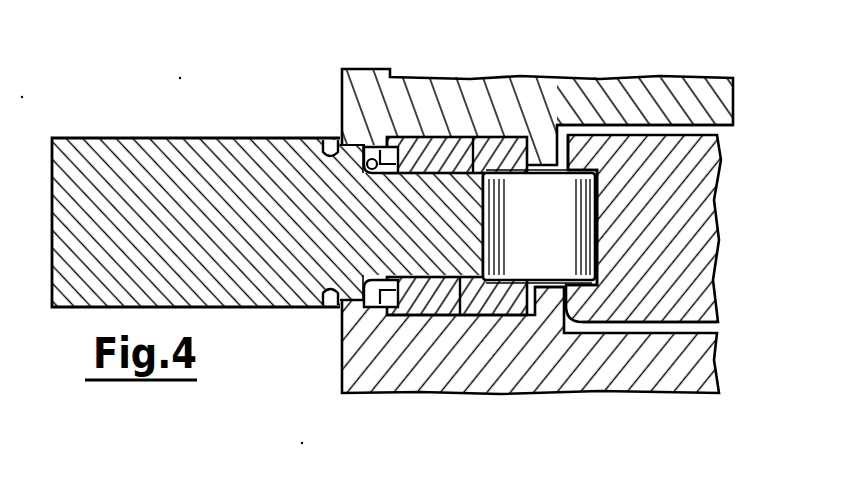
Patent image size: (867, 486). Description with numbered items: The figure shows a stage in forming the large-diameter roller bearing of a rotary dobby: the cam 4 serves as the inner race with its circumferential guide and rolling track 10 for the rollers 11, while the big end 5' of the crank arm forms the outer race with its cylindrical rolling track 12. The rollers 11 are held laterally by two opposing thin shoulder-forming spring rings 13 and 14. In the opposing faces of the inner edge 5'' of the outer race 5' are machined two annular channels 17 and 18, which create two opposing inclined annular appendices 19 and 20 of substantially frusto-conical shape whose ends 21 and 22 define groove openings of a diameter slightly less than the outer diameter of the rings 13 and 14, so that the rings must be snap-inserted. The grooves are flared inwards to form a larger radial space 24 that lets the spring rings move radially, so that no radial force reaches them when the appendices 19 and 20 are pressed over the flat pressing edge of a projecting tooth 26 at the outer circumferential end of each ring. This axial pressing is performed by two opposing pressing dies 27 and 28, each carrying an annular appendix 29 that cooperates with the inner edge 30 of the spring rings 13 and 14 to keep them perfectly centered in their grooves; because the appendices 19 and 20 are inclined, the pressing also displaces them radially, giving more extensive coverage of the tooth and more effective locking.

The cam 4 is at (703, 271).
The big end of the crank arm 5' is at (267, 169).
The inner edge of the outer race 5'' is at (427, 299).
The circumferential guide and rolling track 10 is at (581, 288).
The rollers 11 is at (531, 160).
The cylindrical rolling track 12 is at (480, 158).
The shoulder-forming spring ring 13 is at (447, 158).
The shoulder-forming spring ring 14 is at (441, 304).
The annular channel 17 is at (331, 148).
The annular channel 18 is at (332, 304).
The inclined annular appendix 19 is at (372, 156).
The inclined annular appendix 20 is at (378, 298).
The end of the annular appendix 21 is at (383, 158).
The end of the annular appendix 22 is at (384, 306).
The larger space 24 is at (366, 154).
The projecting tooth 26 is at (373, 162).
The pressing die 27 is at (646, 93).
The pressing die 28 is at (642, 382).
The annular appendix 29 is at (623, 103).
The inner edge of the spring ring 30 is at (535, 204).